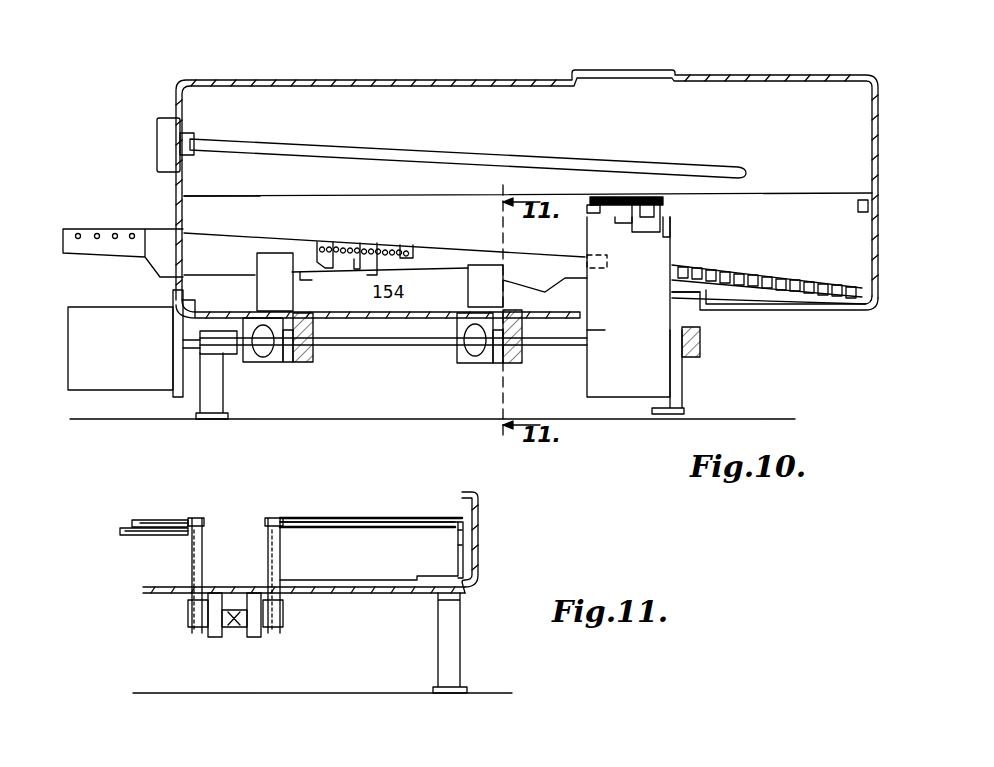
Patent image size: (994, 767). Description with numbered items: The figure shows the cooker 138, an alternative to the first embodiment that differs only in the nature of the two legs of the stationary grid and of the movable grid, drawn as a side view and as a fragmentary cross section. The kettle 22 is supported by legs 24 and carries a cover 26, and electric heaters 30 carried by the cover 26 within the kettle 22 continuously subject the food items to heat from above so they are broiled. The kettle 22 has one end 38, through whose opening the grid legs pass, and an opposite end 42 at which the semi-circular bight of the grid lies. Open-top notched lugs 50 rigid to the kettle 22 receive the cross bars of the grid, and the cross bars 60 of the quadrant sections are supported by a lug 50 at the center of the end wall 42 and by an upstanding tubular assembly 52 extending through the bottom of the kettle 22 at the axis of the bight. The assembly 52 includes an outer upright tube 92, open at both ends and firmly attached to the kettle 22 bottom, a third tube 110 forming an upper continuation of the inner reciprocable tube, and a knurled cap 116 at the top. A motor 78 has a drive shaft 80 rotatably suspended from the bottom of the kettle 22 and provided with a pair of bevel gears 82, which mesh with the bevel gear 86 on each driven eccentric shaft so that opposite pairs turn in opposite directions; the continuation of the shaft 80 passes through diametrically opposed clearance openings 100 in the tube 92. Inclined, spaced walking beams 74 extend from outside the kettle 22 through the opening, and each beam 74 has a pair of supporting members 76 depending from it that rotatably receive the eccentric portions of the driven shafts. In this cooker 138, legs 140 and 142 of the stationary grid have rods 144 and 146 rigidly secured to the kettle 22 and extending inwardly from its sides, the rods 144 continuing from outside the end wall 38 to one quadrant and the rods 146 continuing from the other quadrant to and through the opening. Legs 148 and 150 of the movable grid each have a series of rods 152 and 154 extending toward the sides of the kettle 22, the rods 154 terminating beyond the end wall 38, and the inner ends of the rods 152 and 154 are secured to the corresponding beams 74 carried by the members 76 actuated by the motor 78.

In FIG. 10, the kettle 22 is at (778, 314).
In FIG. 11, the kettle 22 is at (480, 508).
In FIG. 10, the legs 24 is at (206, 408).
In FIG. 11, the legs 24 is at (460, 640).
In FIG. 10, the cover 26 is at (278, 72).
In FIG. 10, the electric heaters 30 is at (362, 148).
In FIG. 10, the end 38 is at (188, 206).
In FIG. 10, the opposite end 42 is at (876, 242).
In FIG. 10, the notched lugs 50 is at (858, 206).
In FIG. 10, the tubular assembly 52 is at (586, 370).
In FIG. 10, the cross bars 60 is at (742, 300).
In FIG. 10, the walking beams 74 is at (306, 282).
In FIG. 11, the walking beams 74 is at (206, 524).
In FIG. 10, the supporting members 76 is at (257, 292).
In FIG. 11, the supporting members 76 is at (266, 552).
In FIG. 10, the motor 78 is at (82, 396).
In FIG. 10, the drive shaft 80 is at (362, 352).
In FIG. 11, the drive shaft 80 is at (240, 633).
In FIG. 10, the bevel gears 82 is at (284, 364).
In FIG. 10, the bevel gear 86 is at (258, 358).
In FIG. 11, the bevel gear 86 is at (212, 638).
In FIG. 10, the outer upright tube 92 is at (666, 230).
In FIG. 10, the clearance openings 100 is at (662, 356).
In FIG. 10, the third tube 110 is at (596, 212).
In FIG. 10, the knurled cap 116 is at (643, 196).
In FIG. 10, the cooker 138 is at (776, 62).
In FIG. 11, the cooker 138 is at (490, 543).
In FIG. 11, the leg of stationary grid 140 is at (121, 532).
In FIG. 10, the leg of stationary grid 142 is at (390, 248).
In FIG. 11, the leg of stationary grid 142 is at (379, 540).
In FIG. 11, the rods 144 is at (168, 536).
In FIG. 10, the rods 146 is at (330, 244).
In FIG. 11, the rods 146 is at (340, 536).
In FIG. 11, the leg of movable grid 148 is at (134, 520).
In FIG. 10, the leg of movable grid 150 is at (268, 240).
In FIG. 11, the leg of movable grid 150 is at (299, 518).
In FIG. 11, the rods 152 is at (160, 516).
In FIG. 10, the rods 154 is at (98, 228).
In FIG. 11, the rods 154 is at (395, 516).